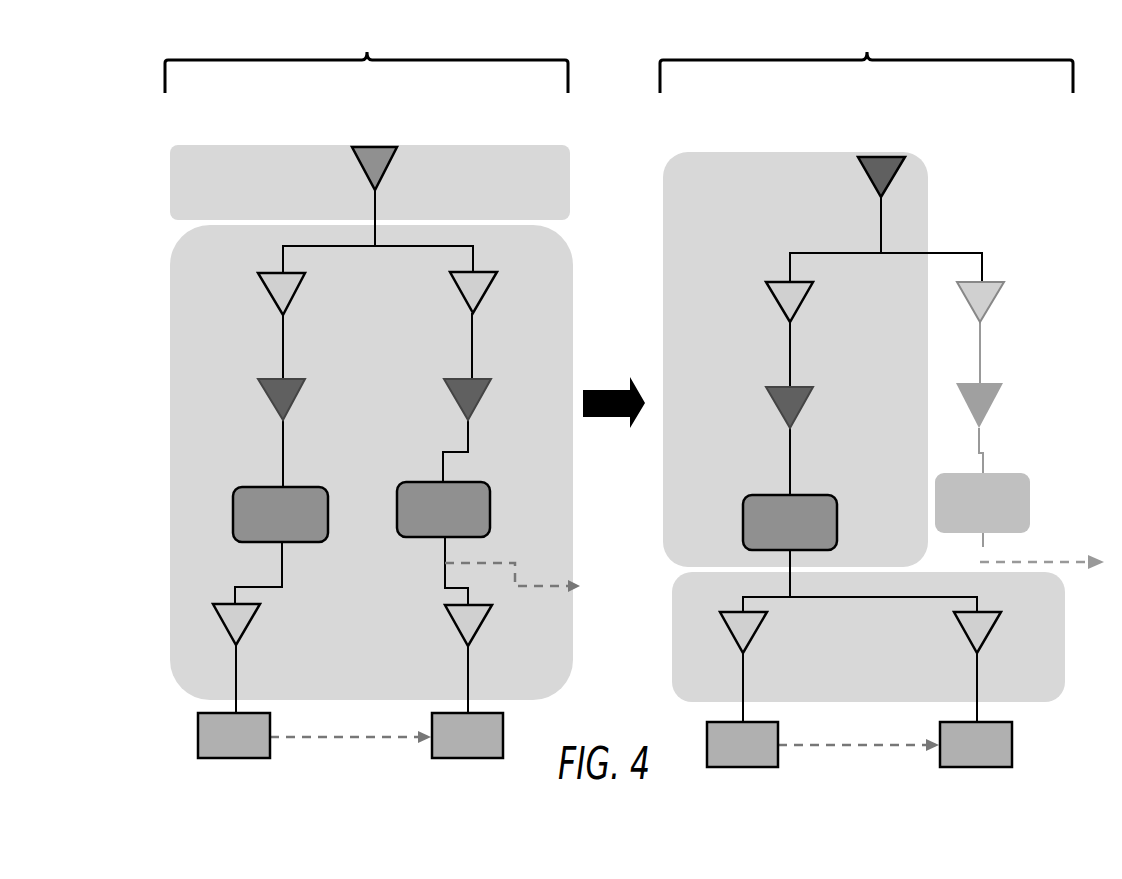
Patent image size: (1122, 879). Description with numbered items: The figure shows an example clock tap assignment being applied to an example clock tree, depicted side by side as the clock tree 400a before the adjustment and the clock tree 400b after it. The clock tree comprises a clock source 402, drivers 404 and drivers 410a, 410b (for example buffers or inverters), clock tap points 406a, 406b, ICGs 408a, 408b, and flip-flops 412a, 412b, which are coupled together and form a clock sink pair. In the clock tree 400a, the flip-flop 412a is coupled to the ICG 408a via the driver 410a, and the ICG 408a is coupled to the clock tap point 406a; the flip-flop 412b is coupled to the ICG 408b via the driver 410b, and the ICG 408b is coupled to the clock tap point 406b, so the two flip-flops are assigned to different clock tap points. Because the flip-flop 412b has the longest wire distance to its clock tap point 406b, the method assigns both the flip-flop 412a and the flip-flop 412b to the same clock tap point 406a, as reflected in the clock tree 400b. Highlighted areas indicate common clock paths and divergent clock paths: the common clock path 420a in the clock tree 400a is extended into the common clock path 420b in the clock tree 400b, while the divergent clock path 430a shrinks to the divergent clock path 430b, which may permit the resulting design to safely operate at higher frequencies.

The clock tree 400a is at (366, 55).
The clock tree 400b is at (866, 55).
The clock source 402 is at (352, 147).
The driver 404 is at (259, 273).
The clock tap point 406a is at (258, 379).
The clock tap point 406b is at (491, 379).
The ICG 408a is at (235, 492).
The ICG 408b is at (490, 486).
The driver 410a is at (214, 604).
The driver 410b is at (446, 605).
The flip-flop 412a is at (198, 727).
The flip-flop 412b is at (432, 727).
The common clock path 420a is at (173, 148).
The common clock path 420b is at (677, 165).
The divergent clock path 430a is at (172, 258).
The divergent clock path 430b is at (675, 580).